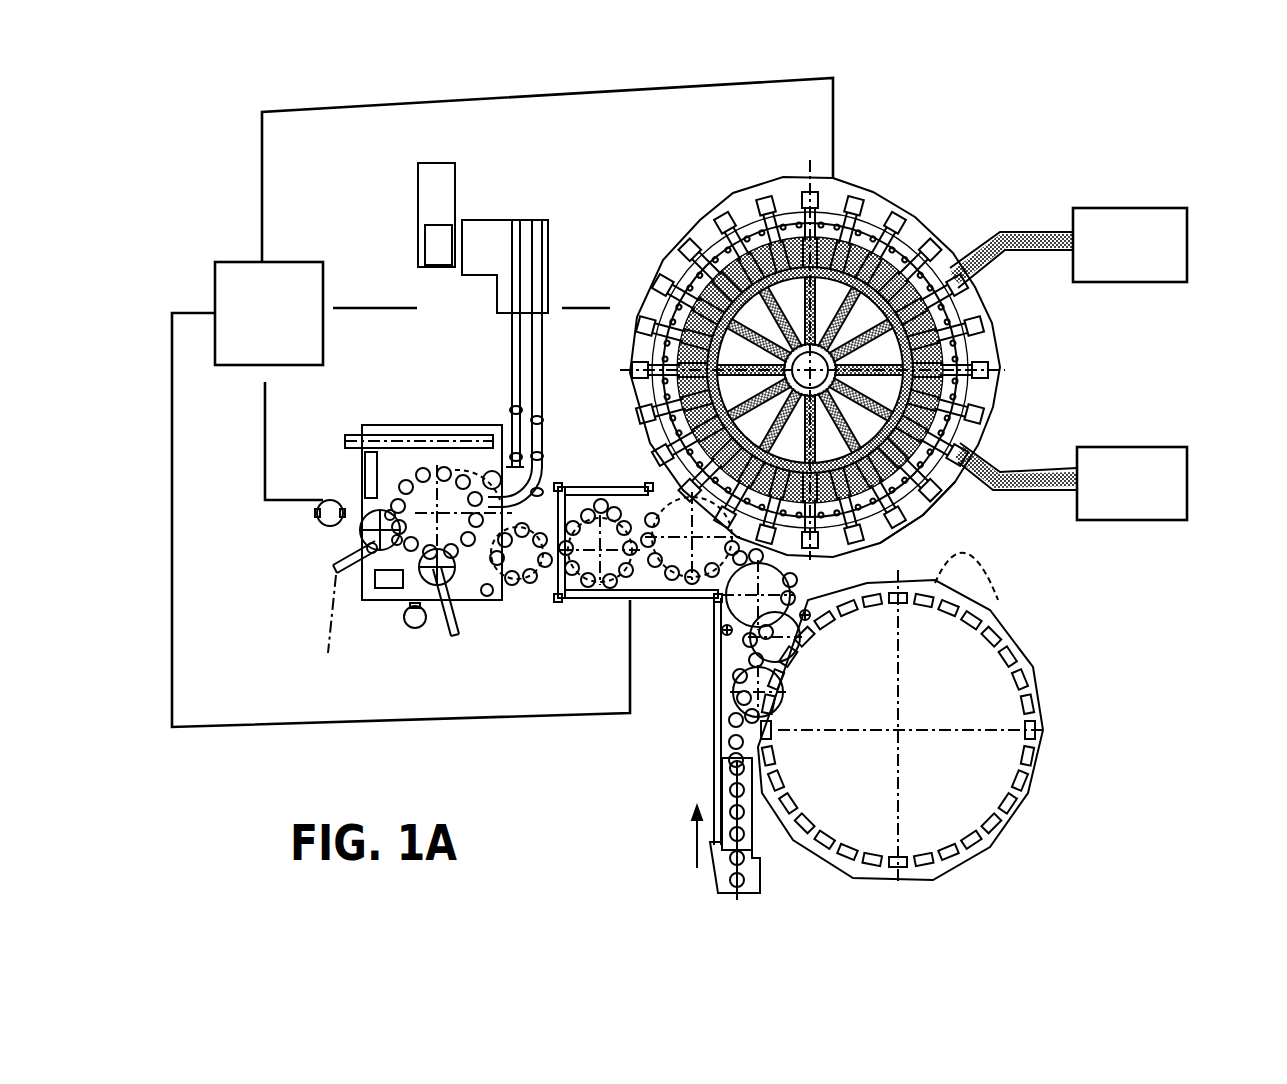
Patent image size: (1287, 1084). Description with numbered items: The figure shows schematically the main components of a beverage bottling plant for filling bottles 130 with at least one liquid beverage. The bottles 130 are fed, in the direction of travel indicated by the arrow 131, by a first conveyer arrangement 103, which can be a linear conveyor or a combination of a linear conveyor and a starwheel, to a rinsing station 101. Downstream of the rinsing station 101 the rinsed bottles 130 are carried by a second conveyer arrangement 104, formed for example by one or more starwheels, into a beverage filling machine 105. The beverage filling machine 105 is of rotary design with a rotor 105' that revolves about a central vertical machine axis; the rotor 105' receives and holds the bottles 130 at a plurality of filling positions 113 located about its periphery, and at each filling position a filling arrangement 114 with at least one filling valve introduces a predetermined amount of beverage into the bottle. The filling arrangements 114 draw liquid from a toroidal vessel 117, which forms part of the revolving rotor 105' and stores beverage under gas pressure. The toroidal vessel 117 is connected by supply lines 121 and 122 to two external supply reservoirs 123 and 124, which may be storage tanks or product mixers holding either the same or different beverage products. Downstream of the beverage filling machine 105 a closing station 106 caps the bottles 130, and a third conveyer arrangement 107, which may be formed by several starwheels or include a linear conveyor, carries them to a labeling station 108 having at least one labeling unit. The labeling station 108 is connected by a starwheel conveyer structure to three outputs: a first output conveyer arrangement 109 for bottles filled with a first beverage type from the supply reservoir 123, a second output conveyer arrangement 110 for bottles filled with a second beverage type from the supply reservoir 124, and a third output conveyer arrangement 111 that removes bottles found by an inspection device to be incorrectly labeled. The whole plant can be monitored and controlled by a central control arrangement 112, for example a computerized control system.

The rinsing station 101 is at (1058, 625).
The first conveyer arrangement 103 is at (755, 812).
The second conveyer arrangement 104 is at (722, 655).
The beverage filling machine 105 is at (867, 360).
The rotor 105' is at (815, 351).
The closing station 106 is at (618, 478).
The third conveyer arrangement 107 is at (570, 612).
The labeling station 108 is at (392, 640).
The first output conveyer arrangement 109 is at (544, 400).
The second output conveyer arrangement 110 is at (511, 345).
The third output conveyer arrangement 111 is at (397, 432).
The central control arrangement 112 is at (250, 329).
The filling positions 113 is at (985, 298).
The filling arrangement 114 is at (980, 396).
The toroidal vessel 117 is at (930, 526).
The supply line 121 is at (1023, 233).
The supply line 122 is at (1032, 468).
The external supply reservoir 123 is at (1178, 253).
The external supply reservoir 124 is at (1187, 490).
The bottles 130 is at (748, 835).
The arrow 131 is at (675, 837).